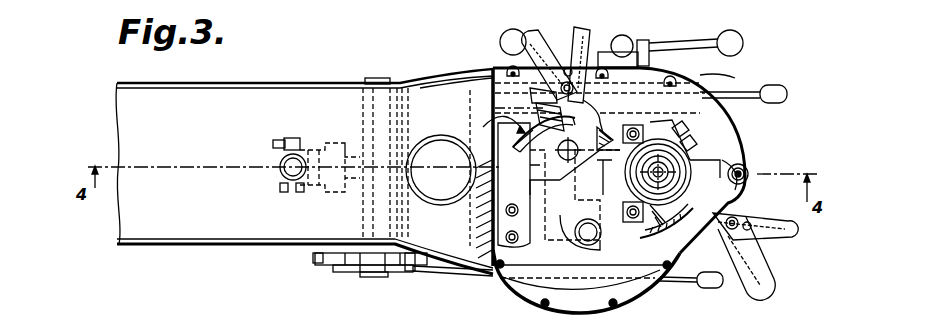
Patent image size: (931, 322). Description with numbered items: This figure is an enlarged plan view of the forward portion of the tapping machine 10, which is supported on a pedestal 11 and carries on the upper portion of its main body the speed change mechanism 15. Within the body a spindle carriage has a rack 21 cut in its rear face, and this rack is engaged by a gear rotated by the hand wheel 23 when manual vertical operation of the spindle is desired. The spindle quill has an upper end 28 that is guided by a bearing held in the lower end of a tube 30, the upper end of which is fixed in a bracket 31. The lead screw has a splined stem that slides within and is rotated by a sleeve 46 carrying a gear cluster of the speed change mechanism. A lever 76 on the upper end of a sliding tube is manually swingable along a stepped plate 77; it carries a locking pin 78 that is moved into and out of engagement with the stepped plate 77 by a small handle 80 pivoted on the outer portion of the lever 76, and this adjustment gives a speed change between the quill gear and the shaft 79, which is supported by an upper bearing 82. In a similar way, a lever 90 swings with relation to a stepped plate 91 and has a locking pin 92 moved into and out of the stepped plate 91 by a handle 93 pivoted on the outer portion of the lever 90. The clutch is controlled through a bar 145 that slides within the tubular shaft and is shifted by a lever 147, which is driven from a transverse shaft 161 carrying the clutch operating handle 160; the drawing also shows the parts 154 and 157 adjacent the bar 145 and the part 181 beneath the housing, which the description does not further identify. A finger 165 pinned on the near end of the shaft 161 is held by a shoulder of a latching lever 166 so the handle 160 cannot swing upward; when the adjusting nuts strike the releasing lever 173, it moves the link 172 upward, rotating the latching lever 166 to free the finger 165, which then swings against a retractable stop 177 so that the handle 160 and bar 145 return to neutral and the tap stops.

The tapping machine 10 is at (331, 78).
The pedestal 11 is at (432, 134).
The speed change mechanism 15 is at (705, 113).
The rack 21 is at (550, 240).
The hand wheel 23 is at (692, 40).
The upper end of the quill 28 is at (668, 158).
The tube 30 is at (658, 152).
The bracket 31 is at (619, 186).
The sleeve 46 is at (568, 160).
The lever 76 is at (742, 165).
The stepped plate 77 is at (674, 233).
The locking pin 78 is at (738, 210).
The shaft 79 is at (588, 226).
The small handle 80 is at (755, 262).
The upper bearing 82 is at (573, 227).
The lever 90 is at (597, 127).
The stepped plate 91 is at (493, 123).
The locking pin 92 is at (492, 108).
The handle 93 is at (547, 46).
The bar 145 is at (282, 173).
The lever 147 is at (344, 153).
The nut 154 is at (277, 142).
The nut 157 is at (290, 137).
The clutch operating handle 160 is at (757, 90).
The transverse shaft 161 is at (381, 78).
The finger 165 is at (354, 265).
The latching lever 166 is at (317, 264).
The link 172 is at (408, 270).
The releasing lever 173 is at (673, 280).
The stop 177 is at (337, 270).
The rod 181 is at (440, 270).